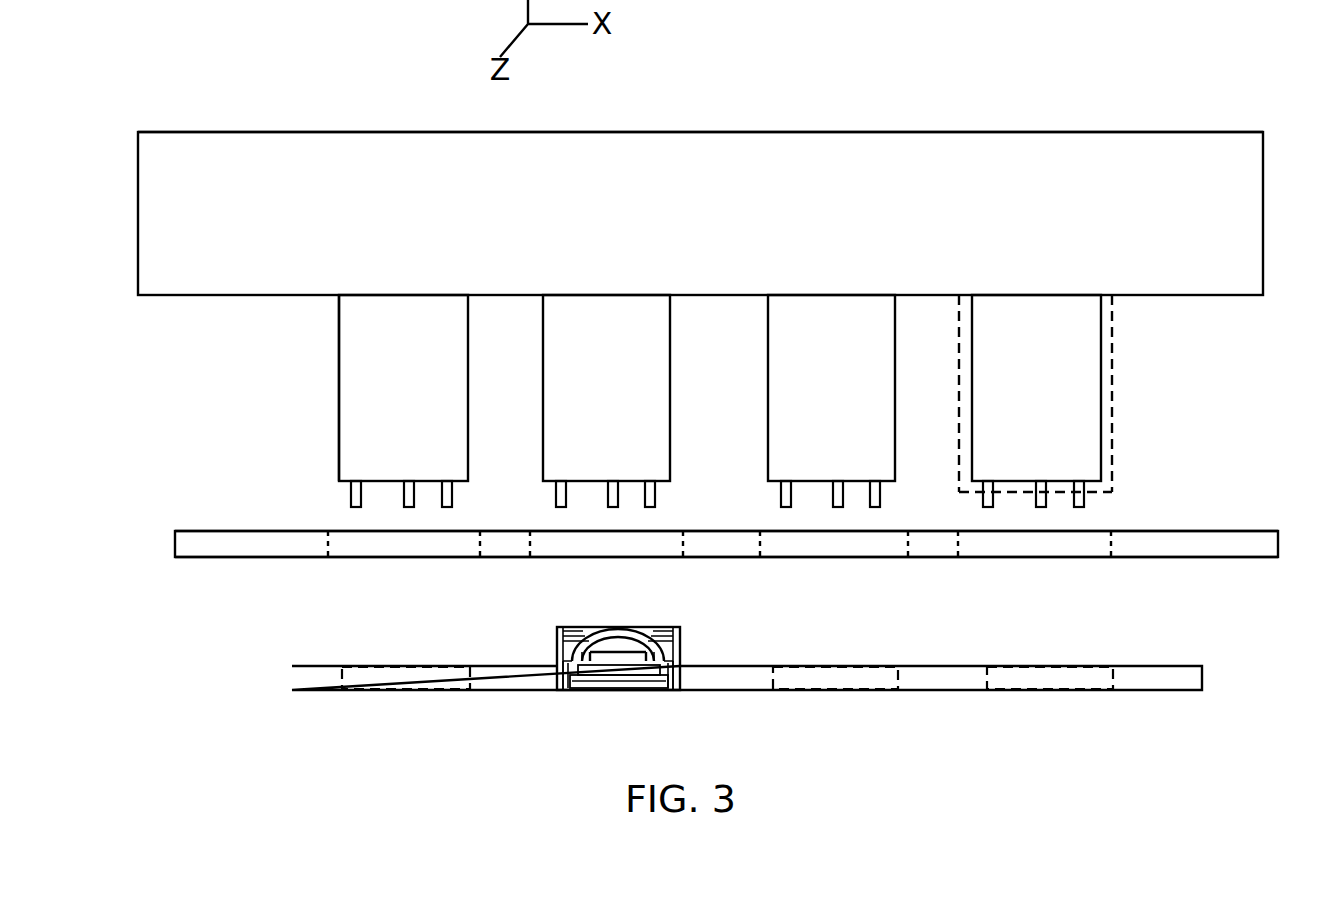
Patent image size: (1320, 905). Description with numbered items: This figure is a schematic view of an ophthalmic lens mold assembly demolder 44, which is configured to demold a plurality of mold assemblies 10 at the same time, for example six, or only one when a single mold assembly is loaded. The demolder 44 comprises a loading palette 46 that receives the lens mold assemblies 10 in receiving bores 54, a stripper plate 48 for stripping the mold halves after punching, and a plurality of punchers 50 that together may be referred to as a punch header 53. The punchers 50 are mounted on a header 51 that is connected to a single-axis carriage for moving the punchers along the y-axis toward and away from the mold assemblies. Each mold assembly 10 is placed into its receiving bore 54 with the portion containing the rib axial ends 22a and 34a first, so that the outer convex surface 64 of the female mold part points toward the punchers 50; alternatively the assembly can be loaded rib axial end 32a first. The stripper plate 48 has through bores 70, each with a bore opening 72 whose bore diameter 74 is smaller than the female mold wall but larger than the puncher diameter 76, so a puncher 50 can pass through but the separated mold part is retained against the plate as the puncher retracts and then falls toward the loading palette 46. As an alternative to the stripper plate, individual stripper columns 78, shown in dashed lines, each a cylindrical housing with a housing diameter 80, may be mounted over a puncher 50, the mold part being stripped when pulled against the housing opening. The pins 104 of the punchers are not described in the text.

The mold assembly 10 is at (704, 650).
The rib axial end 22a is at (582, 690).
The rib axial end 32a is at (559, 627).
The rib axial end 34a is at (560, 690).
The ophthalmic lens mold assembly demolder 44 is at (986, 104).
The loading palette 46 is at (262, 697).
The stripper plate 48 is at (183, 518).
The puncher 50 is at (424, 408).
The header 51 is at (723, 132).
The punch header 53 is at (218, 359).
The receiving bore 54 is at (390, 662).
The outer convex surface 64 is at (618, 640).
The through bore 70 is at (660, 529).
The bore opening 72 is at (365, 558).
The bore diameter 74 is at (296, 530).
The puncher diameter 76 is at (339, 434).
The stripper column 78 is at (1113, 335).
The housing diameter 80 is at (1106, 492).
The module pins 104 is at (452, 494).